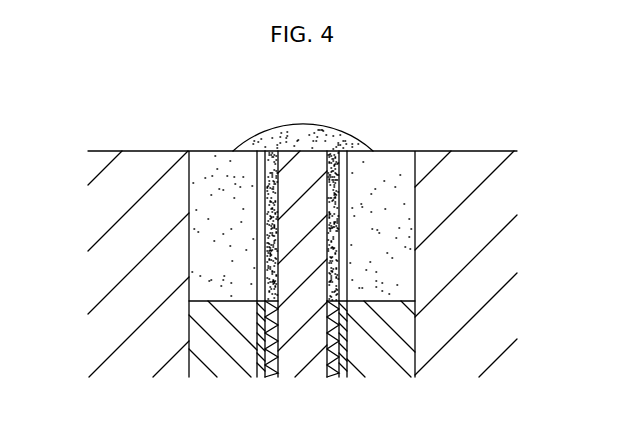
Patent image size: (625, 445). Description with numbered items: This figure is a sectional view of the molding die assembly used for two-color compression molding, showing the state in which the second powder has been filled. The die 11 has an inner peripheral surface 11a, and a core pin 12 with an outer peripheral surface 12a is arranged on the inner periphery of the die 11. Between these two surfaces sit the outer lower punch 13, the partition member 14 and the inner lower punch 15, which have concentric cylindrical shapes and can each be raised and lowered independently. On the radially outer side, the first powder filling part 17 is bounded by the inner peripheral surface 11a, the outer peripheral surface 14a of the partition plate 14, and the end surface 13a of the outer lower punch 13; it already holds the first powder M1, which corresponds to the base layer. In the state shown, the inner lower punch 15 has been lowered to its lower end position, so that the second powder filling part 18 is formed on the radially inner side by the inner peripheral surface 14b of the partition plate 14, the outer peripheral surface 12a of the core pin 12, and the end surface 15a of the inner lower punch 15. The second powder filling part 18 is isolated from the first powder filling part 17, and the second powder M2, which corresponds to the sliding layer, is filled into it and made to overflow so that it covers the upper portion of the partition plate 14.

The die 11 is at (469, 165).
The inner peripheral surface 11a is at (192, 192).
The core pin 12 is at (306, 352).
The outer peripheral surface 12a is at (258, 218).
The outer lower punch 13 is at (220, 336).
The end surface 13a is at (218, 301).
The partition member 14 is at (257, 344).
The outer peripheral surface 14a is at (257, 180).
The inner peripheral surface 14b is at (283, 150).
The inner lower punch 15 is at (283, 350).
The end surface 15a is at (255, 272).
The first powder filling part 17 is at (377, 196).
The second powder filling part 18 is at (336, 150).
The first powder M1 is at (394, 228).
The second powder M2 is at (327, 262).